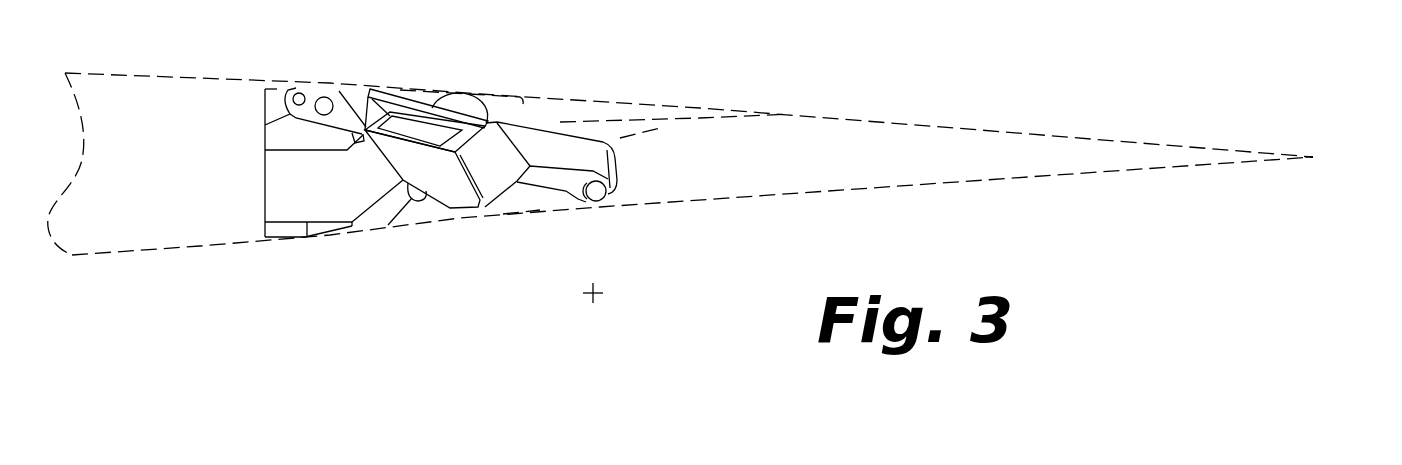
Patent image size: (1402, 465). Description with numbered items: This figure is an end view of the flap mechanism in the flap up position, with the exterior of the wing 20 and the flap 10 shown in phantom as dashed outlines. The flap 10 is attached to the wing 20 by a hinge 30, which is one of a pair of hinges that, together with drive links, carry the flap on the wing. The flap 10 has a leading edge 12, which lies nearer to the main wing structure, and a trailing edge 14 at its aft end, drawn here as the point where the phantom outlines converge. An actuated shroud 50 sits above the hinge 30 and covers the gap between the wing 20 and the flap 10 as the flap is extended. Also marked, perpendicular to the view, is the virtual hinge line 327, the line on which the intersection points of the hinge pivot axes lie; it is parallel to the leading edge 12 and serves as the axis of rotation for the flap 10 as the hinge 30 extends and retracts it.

The flap 10 is at (1004, 119).
The leading edge 12 is at (574, 222).
The trailing edge 14 is at (1326, 143).
The wing 20 is at (174, 173).
The hinge 30 is at (438, 223).
The actuated shroud 50 is at (584, 88).
The virtual hinge line 327 is at (575, 313).